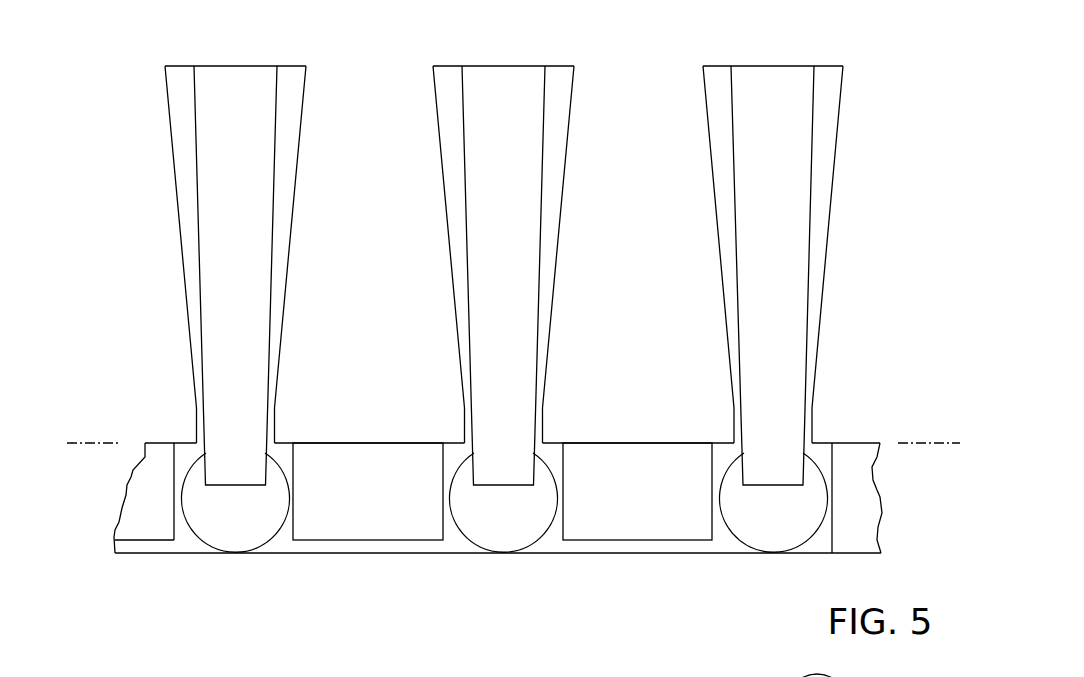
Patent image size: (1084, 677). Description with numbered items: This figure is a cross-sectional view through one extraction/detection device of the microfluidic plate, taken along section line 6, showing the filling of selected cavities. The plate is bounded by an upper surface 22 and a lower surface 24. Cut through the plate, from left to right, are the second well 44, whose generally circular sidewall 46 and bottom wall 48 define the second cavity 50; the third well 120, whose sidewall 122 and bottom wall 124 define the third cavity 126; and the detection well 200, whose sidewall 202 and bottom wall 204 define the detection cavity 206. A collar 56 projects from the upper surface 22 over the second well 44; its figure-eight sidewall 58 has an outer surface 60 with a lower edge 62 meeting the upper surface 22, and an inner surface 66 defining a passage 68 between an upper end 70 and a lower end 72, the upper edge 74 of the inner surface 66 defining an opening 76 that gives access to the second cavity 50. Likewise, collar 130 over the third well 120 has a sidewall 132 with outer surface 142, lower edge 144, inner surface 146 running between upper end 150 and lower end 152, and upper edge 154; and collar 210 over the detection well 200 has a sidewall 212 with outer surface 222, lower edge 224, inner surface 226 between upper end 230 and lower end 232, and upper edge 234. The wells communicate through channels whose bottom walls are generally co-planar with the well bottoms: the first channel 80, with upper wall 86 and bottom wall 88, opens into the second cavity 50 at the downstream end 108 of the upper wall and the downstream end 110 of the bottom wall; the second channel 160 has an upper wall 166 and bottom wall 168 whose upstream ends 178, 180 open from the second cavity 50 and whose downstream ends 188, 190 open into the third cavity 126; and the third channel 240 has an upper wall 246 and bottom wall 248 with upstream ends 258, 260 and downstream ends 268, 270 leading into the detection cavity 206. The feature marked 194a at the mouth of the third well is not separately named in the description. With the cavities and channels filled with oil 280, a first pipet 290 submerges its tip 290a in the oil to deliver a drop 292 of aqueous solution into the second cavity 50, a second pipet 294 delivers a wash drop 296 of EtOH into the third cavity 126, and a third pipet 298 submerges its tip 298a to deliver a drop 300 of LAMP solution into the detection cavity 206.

The section line 6- 6 is at (97, 437).
The upper surface 22 is at (355, 443).
The lower surface 24 is at (318, 555).
The second well 44 is at (168, 437).
The sidewall 46 is at (178, 508).
The bottom wall 48 is at (208, 555).
The second cavity 50 is at (287, 460).
The collar 56 is at (280, 410).
The sidewall 58 is at (273, 428).
The outer surface 60 is at (192, 428).
The lower edge 62 is at (188, 438).
The inner surface 66 is at (268, 457).
The passage 68 is at (285, 671).
The upper end 70 is at (193, 440).
The lower end 72 is at (197, 455).
The upper edge 74 is at (303, 443).
The opening 76 is at (247, 671).
The first channel 80 is at (125, 555).
The upper wall 86 is at (127, 535).
The bottom wall 88 is at (150, 555).
The downstream end 108 is at (180, 555).
The downstream end 110 is at (192, 555).
The third well 120 is at (567, 490).
The sidewall 122 is at (617, 447).
The bottom wall 124 is at (513, 555).
The third cavity 126 is at (430, 448).
The collar 130 is at (540, 403).
The sidewall 132 is at (458, 425).
The outer surface 142 is at (542, 417).
The lower edge 144 is at (543, 433).
The inner surface 146 is at (537, 432).
The upper end 150 is at (463, 430).
The lower end 152 is at (462, 452).
The upper edge 154 is at (462, 403).
The second channel 160 is at (372, 555).
The upper wall 166 is at (367, 537).
The bottom wall 168 is at (395, 555).
The upstream end 178 is at (283, 555).
The upstream end 180 is at (302, 555).
The downstream end 188 is at (437, 537).
The downstream end 190 is at (438, 555).
The well edge 194a is at (567, 447).
The detection well 200 is at (833, 523).
The sidewall 202 is at (823, 487).
The bottom wall 204 is at (767, 555).
The detection cavity 206 is at (813, 553).
The collar 210 is at (720, 435).
The sidewall 212 is at (813, 427).
The outer surface 222 is at (817, 430).
The lower edge 224 is at (813, 438).
The inner surface 226 is at (810, 420).
The upper end 230 is at (732, 408).
The lower end 232 is at (733, 448).
The upper edge 234 is at (808, 410).
The third channel 240 is at (627, 555).
The upper wall 246 is at (635, 537).
The bottom wall 248 is at (655, 555).
The upstream end 258 is at (567, 535).
The upstream end 260 is at (582, 555).
The downstream end 268 is at (712, 537).
The downstream end 270 is at (697, 555).
The oil 280 is at (457, 555).
The first pipet 290 is at (310, 82).
The tip 290a is at (283, 333).
The drop 292 is at (255, 523).
The second pipet 294 is at (578, 70).
The drop 296 is at (523, 523).
The third pipet 298 is at (833, 70).
The tip 298a is at (808, 467).
The drop 300 is at (793, 523).